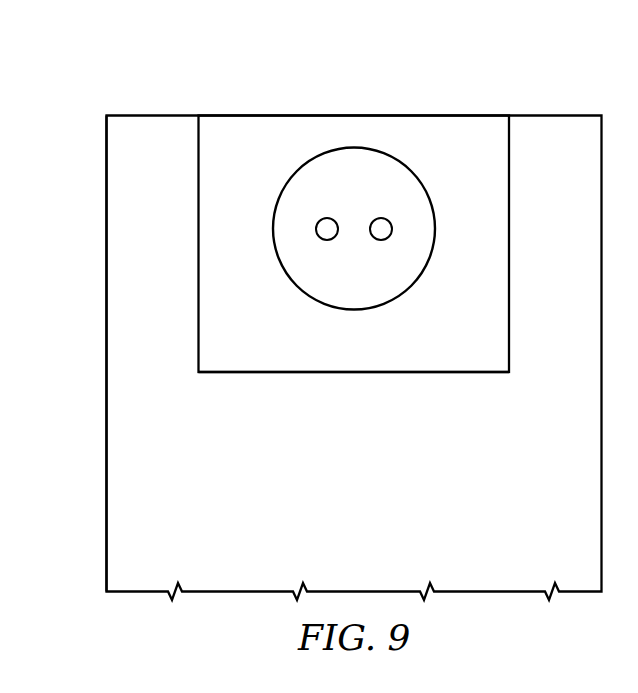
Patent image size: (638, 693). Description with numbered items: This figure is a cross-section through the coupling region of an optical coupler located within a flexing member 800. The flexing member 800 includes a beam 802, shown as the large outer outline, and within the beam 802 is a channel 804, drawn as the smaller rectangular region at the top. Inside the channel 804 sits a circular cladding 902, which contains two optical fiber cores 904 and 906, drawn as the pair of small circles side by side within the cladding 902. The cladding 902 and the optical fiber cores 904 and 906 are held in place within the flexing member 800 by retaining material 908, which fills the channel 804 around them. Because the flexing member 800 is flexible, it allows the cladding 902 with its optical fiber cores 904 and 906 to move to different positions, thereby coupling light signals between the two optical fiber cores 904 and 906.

The flexing member 800 is at (466, 80).
The beam 802 is at (106, 241).
The channel 804 is at (509, 275).
The cladding 902 is at (303, 293).
The optical fiber core 904 is at (319, 220).
The optical fiber core 906 is at (389, 220).
The retaining material 908 is at (245, 361).